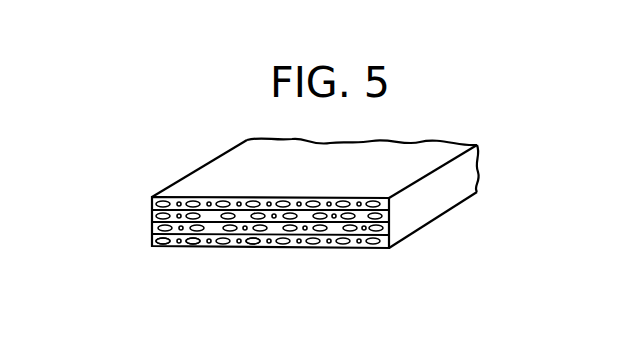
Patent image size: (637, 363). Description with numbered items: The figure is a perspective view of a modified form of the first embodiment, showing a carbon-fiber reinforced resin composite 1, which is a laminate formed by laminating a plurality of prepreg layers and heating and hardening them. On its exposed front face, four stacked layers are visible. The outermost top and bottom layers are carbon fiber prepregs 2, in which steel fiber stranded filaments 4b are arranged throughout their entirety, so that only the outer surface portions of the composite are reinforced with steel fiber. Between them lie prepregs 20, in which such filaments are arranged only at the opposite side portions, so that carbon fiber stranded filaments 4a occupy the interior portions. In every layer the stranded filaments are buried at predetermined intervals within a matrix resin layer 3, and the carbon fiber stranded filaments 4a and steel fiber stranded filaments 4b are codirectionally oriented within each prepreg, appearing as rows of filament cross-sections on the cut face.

The carbon-fiber reinforced resin composite 1 is at (199, 150).
The carbon fiber prepreg 2 is at (143, 197).
The prepreg 20 is at (141, 214).
The matrix resin layer 3 is at (242, 247).
The carbon fiber stranded filaments 4a is at (170, 247).
The steel fiber stranded filaments 4b is at (183, 247).